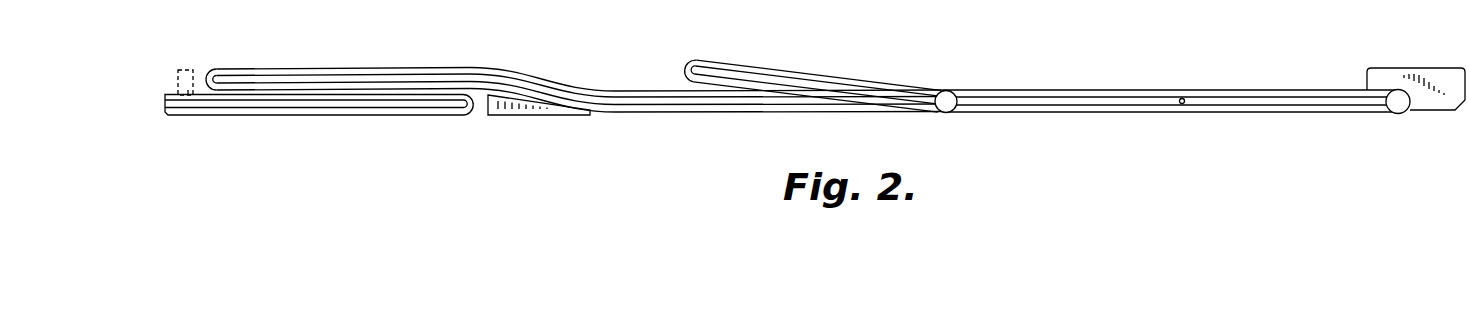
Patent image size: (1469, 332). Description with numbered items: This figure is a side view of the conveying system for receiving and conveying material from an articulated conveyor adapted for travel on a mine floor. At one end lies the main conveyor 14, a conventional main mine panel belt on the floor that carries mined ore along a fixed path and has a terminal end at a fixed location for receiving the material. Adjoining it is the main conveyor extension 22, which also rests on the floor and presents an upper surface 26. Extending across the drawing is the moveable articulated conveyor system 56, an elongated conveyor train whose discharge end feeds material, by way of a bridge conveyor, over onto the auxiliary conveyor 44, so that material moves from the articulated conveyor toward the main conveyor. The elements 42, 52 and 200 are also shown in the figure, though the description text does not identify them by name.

The main conveyor 14 is at (170, 95).
The main conveyor extension 22 is at (371, 116).
The upper surface 26 is at (247, 93).
The fastener point 42 is at (188, 93).
The auxiliary conveyor 44 is at (385, 67).
The wedge pad 52 is at (538, 119).
The moveable articulated conveyor system 56 is at (1075, 89).
The pin 200 is at (1183, 98).